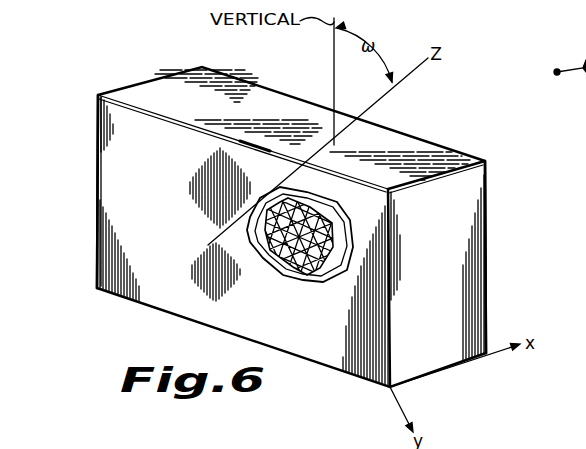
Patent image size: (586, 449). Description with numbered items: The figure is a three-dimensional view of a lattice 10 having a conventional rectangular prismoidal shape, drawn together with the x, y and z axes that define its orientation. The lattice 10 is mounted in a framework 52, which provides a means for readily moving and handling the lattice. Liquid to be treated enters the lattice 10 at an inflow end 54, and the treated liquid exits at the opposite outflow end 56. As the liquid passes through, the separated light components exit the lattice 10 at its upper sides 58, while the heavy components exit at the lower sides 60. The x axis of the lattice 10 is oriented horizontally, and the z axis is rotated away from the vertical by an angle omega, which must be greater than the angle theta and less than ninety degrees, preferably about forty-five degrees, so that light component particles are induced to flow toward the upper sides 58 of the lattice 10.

The three-dimensional lattice 10 is at (413, 118).
The framework 52 is at (147, 108).
The inflow end 54 is at (123, 202).
The outflow end 56 is at (487, 183).
The upper sides 58 is at (95, 147).
The lower sides 60 is at (462, 268).